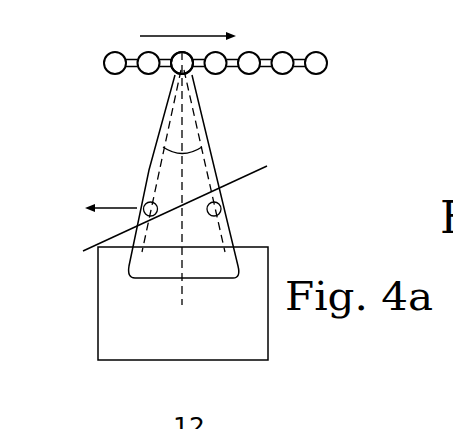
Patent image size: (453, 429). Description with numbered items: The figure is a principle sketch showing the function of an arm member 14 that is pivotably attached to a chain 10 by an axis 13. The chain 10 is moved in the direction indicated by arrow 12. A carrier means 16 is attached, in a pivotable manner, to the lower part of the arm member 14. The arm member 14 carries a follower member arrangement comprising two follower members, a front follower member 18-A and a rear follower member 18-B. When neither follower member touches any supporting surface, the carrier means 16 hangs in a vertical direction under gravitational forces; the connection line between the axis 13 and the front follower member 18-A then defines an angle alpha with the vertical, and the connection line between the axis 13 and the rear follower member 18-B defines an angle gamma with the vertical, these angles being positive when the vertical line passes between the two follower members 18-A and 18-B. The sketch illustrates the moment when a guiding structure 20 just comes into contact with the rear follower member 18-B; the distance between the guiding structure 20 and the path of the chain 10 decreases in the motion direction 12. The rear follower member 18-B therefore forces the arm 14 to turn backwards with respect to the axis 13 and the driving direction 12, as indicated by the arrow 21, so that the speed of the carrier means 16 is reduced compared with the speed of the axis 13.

The chain 10 is at (107, 62).
The arrow 12 is at (188, 22).
The axis 13 is at (174, 80).
The arm member 14 is at (133, 277).
The carrier means 16 is at (207, 359).
The front follower member 18-A is at (221, 208).
The rear follower member 18-B is at (144, 203).
The guiding structure 20 is at (267, 166).
The arrow 21 is at (95, 208).